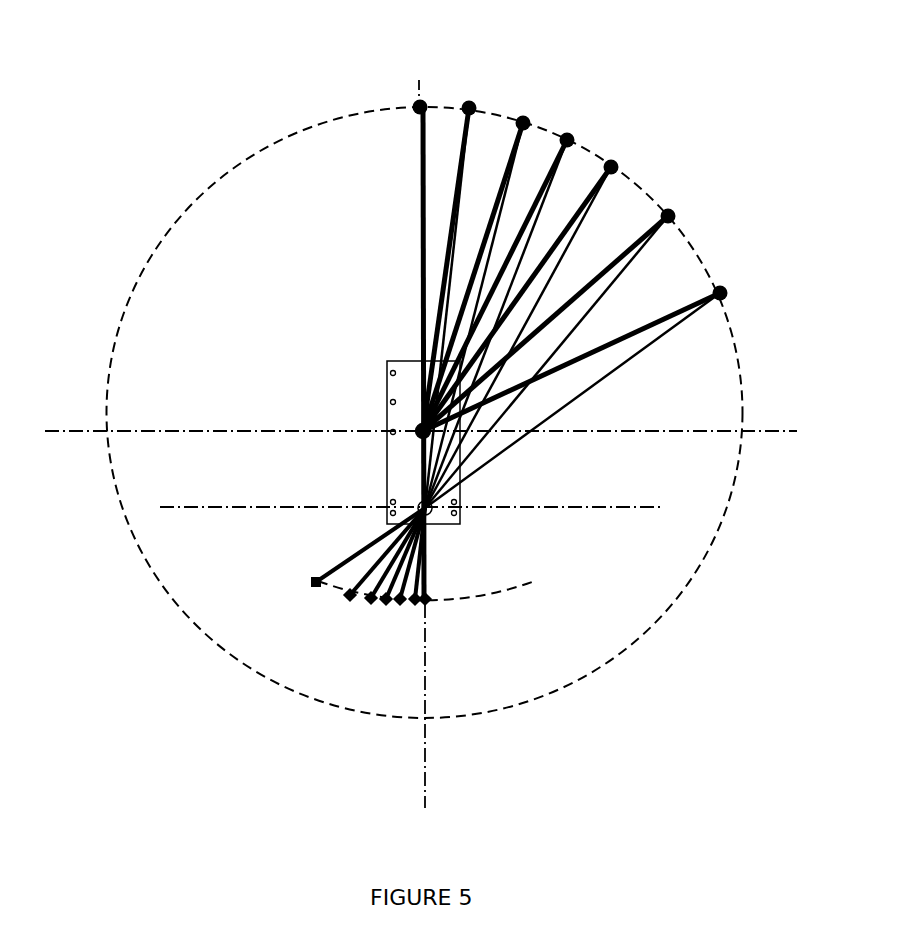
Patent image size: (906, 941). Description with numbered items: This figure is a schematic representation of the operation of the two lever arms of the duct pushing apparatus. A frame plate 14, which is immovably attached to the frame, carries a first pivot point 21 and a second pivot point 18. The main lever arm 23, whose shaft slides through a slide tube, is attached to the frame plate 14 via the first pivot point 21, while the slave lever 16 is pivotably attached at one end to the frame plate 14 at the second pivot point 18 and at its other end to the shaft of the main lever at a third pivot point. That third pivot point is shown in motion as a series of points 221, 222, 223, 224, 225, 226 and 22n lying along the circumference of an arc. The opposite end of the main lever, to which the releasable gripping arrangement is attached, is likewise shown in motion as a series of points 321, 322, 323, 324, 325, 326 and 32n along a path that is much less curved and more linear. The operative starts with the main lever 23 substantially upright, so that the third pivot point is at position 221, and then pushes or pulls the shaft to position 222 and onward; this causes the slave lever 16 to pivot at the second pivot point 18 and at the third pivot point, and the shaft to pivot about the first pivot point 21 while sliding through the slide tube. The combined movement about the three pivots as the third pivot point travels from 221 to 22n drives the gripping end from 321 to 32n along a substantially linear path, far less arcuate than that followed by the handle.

The frame plate 14 is at (392, 360).
The slave lever 16 is at (593, 371).
The second pivot point 18 is at (417, 430).
The first pivot point 21 is at (432, 517).
The first position of third pivot point 221 is at (432, 99).
The second position of third pivot point 222 is at (481, 98).
The third position of third pivot point 223 is at (539, 116).
The fourth position of third pivot point 224 is at (582, 133).
The fifth position of third pivot point 225 is at (626, 161).
The sixth position of third pivot point 226 is at (682, 209).
The nth position of third pivot point 22n is at (735, 287).
The main lever arm 23 is at (345, 562).
The first position of other end of main lever 321 is at (438, 615).
The second position of other end of main lever 322 is at (416, 610).
The third position of other end of main lever 323 is at (397, 619).
The fourth position of other end of main lever 324 is at (379, 614).
The fifth position of other end of main lever 325 is at (362, 608).
The sixth position of other end of main lever 326 is at (337, 604).
The nth position of other end of main lever 32n is at (304, 582).